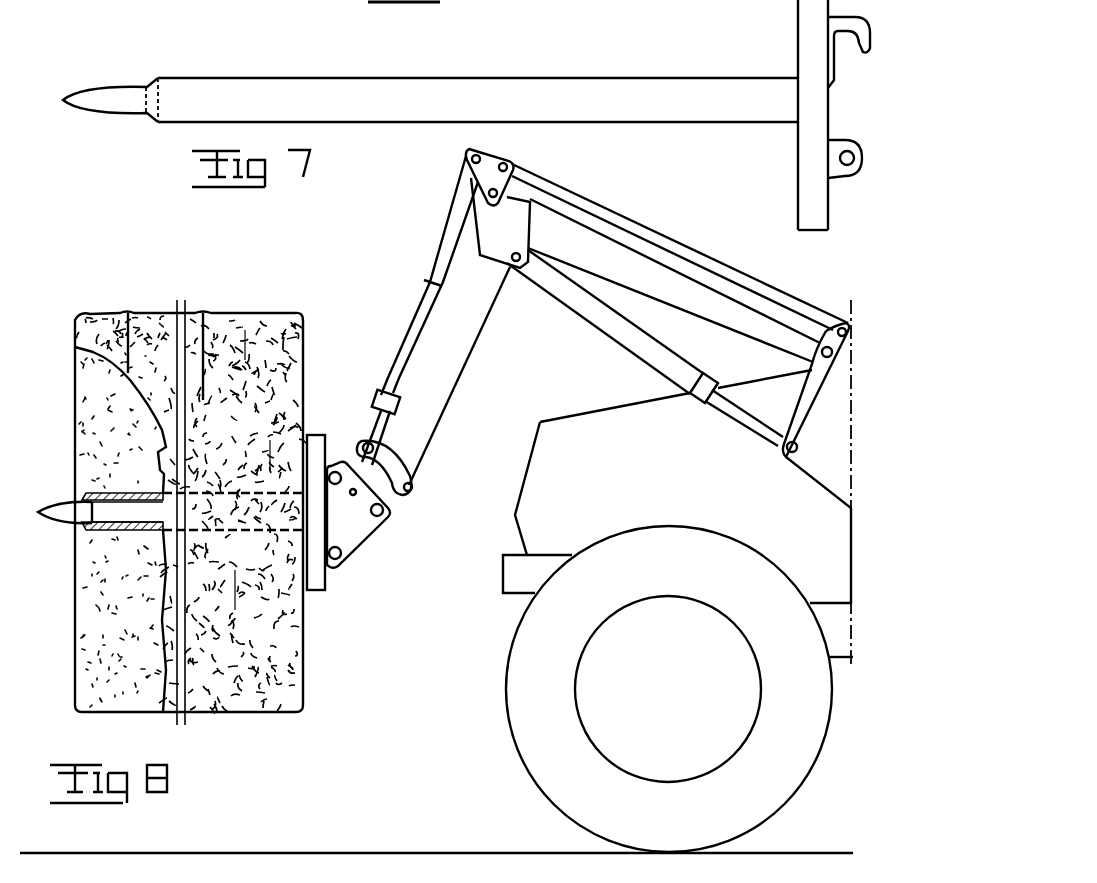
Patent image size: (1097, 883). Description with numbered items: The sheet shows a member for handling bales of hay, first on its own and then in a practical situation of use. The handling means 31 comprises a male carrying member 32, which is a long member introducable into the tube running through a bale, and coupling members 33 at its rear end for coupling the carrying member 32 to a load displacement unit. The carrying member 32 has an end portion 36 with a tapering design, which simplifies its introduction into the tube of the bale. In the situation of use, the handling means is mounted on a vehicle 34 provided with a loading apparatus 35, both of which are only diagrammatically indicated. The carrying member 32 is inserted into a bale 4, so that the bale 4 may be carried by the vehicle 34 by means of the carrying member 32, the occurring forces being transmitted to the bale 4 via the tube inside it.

In FIG. 8, the bale 4 is at (229, 318).
In FIG. 7, the means for handling the bales 31 is at (401, 126).
In FIG. 7, the male carrying member 32 is at (488, 79).
In FIG. 7, the coupling members 33 is at (858, 60).
In FIG. 8, the vehicle 34 is at (472, 665).
In FIG. 8, the loading apparatus 35 is at (409, 524).
In FIG. 7, the end portion 36 is at (118, 100).